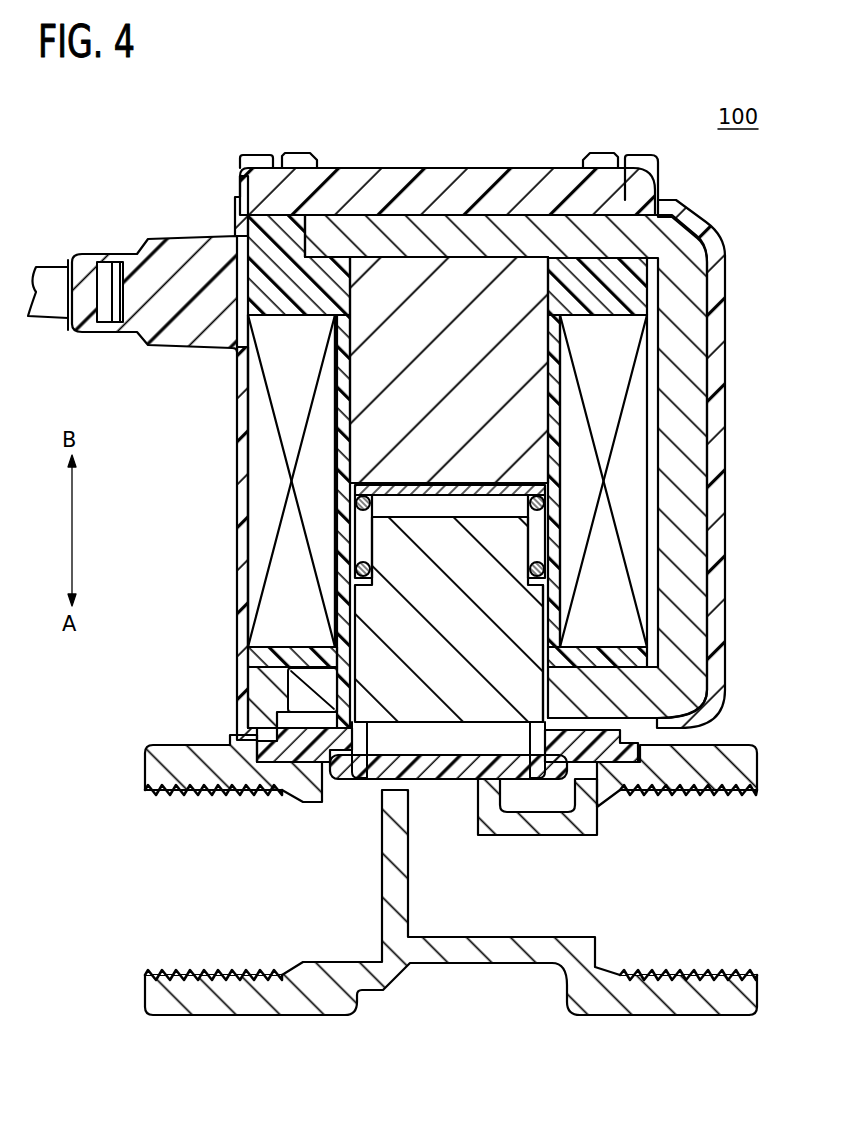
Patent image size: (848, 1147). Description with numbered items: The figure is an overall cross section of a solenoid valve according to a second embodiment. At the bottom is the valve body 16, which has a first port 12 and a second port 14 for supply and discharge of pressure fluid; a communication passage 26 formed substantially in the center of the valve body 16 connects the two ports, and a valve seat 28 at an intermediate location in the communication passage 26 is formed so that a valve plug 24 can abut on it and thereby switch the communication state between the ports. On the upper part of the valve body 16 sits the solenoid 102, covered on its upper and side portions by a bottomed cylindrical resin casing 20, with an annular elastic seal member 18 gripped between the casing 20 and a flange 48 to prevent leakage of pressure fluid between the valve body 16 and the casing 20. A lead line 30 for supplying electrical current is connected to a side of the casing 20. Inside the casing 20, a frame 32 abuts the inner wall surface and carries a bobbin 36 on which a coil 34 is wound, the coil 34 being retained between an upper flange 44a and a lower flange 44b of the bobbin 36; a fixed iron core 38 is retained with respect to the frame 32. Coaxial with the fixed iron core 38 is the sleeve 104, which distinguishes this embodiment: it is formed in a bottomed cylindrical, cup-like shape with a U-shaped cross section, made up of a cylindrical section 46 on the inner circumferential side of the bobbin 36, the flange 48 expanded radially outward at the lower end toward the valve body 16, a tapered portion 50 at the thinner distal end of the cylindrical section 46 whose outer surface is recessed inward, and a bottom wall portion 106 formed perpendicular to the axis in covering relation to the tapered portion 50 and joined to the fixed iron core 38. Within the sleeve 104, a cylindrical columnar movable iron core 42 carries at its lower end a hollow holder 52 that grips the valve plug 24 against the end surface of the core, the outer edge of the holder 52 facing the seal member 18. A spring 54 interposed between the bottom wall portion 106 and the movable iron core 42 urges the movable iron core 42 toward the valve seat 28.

The first port 12 is at (153, 870).
The second port 14 is at (745, 878).
The valve body 16 is at (667, 1025).
The seal member 18 is at (605, 776).
The casing 20 is at (713, 367).
The valve plug 24 is at (447, 768).
The communication passage 26 is at (452, 915).
The valve seat 28 is at (412, 770).
The lead line 30 is at (50, 278).
The frame 32 is at (482, 222).
The coil 34 is at (262, 545).
The bobbin 36 is at (560, 378).
The fixed iron core 38 is at (413, 268).
The movable iron core 42 is at (482, 507).
The upper flange 44a is at (600, 300).
The lower flange 44b is at (600, 658).
The cylindrical section 46 is at (550, 575).
The flange 48 is at (587, 718).
The tapered portion 50 is at (550, 513).
The holder 52 is at (537, 792).
The spring 54 is at (375, 486).
The solenoid 102 is at (260, 452).
The sleeve 104 is at (534, 633).
The bottom wall portion 106 is at (437, 486).